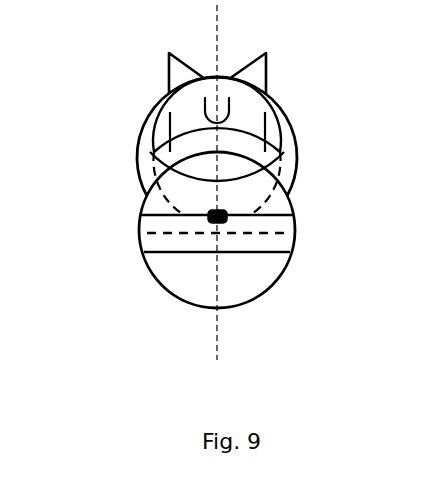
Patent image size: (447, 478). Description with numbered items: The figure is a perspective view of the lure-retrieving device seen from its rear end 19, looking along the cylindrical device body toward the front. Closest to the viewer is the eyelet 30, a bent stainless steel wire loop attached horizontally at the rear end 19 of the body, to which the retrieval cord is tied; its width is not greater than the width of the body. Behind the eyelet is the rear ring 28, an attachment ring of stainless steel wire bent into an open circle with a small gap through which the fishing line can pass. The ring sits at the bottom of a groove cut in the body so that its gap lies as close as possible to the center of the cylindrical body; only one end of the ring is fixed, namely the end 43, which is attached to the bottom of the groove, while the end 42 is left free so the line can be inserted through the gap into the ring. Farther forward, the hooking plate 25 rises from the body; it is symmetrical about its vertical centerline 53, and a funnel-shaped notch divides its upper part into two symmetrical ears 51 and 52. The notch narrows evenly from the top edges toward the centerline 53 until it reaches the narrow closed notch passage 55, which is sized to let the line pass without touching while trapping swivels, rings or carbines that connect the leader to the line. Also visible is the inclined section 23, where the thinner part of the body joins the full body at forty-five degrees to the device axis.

The rear end 19 is at (245, 272).
The section 23 is at (237, 148).
The hooking plate 25 is at (245, 118).
The rear ring 28 is at (274, 112).
The eyelet 30 is at (163, 240).
The free end of the rear attachment ring 42 is at (160, 203).
The attached end of the rear attachment ring 43 is at (210, 226).
The ear 51 is at (268, 65).
The ear 52 is at (168, 68).
The vertical centerline 53 is at (219, 338).
The notch passage 55 is at (162, 108).